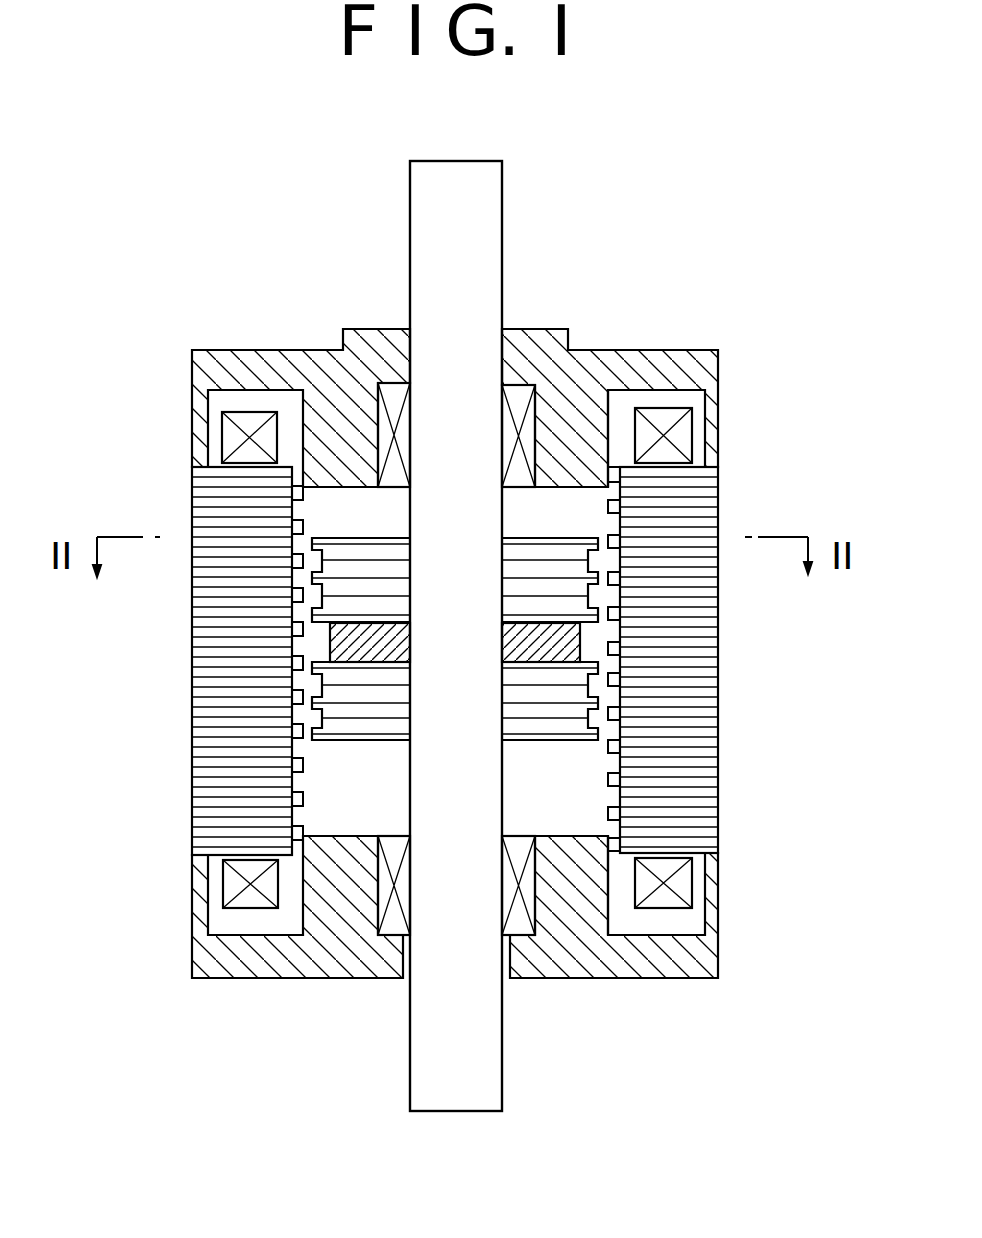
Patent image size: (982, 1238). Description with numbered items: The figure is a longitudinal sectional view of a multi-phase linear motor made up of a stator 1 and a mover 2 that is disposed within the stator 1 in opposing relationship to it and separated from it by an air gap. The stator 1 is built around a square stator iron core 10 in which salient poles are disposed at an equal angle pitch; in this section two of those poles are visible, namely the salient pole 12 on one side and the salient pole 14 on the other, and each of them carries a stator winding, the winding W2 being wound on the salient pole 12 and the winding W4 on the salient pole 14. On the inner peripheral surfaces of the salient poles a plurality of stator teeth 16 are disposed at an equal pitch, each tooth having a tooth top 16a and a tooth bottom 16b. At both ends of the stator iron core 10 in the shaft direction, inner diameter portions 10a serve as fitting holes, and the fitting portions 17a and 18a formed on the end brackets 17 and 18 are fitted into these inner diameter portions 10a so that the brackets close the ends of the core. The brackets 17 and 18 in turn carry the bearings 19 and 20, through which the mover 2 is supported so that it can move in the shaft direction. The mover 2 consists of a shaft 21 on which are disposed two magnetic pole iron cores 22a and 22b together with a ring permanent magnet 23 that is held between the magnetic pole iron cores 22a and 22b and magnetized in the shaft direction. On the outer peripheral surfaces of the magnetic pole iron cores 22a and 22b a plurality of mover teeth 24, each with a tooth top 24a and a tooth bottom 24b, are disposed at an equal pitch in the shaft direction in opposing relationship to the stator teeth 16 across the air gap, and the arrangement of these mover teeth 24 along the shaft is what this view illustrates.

The stator 1 is at (720, 336).
The mover 2 is at (508, 798).
The stator iron core 10 is at (724, 497).
The inner diameter portion 10a is at (593, 463).
The salient pole 12 is at (647, 690).
The salient pole 14 is at (242, 673).
The stator teeth 16 is at (300, 803).
The tooth top 16a is at (302, 798).
The tooth bottom 16b is at (300, 778).
The end bracket 17 is at (660, 378).
The fitting portion 17a is at (557, 463).
The end bracket 18 is at (668, 965).
The fitting portion 18a is at (562, 860).
The bearing 19 is at (392, 397).
The bearing 20 is at (393, 920).
The shaft 21 is at (422, 184).
The magnetic pole iron core 22a is at (590, 548).
The magnetic pole iron core 22b is at (557, 718).
The ring permanent magnet 23 is at (572, 642).
The mover teeth 24 is at (320, 540).
The tooth top 24a is at (290, 542).
The tooth bottom 24b is at (290, 718).
The stator winding W2 is at (680, 440).
The stator winding W4 is at (232, 437).